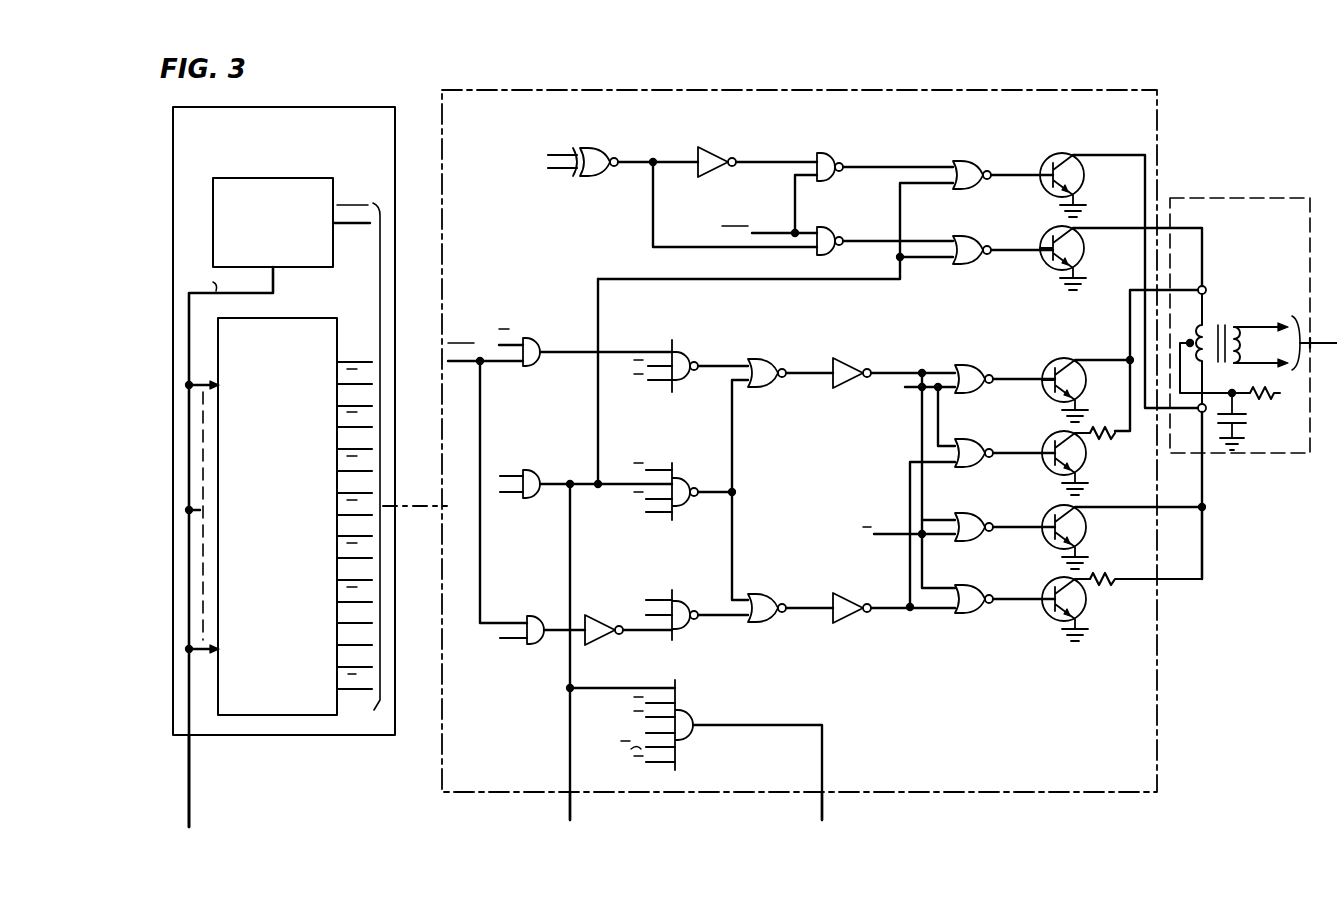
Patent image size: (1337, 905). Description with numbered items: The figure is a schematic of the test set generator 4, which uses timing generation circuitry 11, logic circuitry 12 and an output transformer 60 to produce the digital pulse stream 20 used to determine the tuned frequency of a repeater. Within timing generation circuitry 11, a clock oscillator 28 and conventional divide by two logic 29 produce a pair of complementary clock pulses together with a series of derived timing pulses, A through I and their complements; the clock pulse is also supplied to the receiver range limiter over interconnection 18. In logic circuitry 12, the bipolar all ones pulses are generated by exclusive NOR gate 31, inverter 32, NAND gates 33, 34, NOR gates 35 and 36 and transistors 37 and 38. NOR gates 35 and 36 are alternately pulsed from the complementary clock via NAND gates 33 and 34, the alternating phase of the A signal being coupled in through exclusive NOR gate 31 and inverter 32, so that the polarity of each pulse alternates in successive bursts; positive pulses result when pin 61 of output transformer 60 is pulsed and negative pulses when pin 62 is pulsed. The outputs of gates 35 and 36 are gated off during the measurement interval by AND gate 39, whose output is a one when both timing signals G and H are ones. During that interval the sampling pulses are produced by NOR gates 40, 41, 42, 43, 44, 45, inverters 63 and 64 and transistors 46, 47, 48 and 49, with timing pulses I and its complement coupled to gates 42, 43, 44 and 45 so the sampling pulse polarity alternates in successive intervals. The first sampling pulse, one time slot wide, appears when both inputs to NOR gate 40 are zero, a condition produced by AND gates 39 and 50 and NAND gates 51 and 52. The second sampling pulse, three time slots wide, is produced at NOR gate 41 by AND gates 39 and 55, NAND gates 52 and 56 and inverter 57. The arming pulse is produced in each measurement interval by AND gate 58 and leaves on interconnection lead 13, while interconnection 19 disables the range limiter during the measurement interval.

The timing generation circuitry 11 is at (391, 107).
The clock oscillator 28 is at (213, 206).
The divide by two logic 29 is at (318, 318).
The interconnection 18 is at (189, 778).
The generator 4 is at (843, 82).
The logic circuitry 12 is at (586, 121).
The exclusive NOR gate 31 is at (598, 178).
The inverter 32 is at (723, 134).
The NAND gate 33 is at (820, 153).
The NAND gate 34 is at (836, 254).
The NOR gate 35 is at (958, 160).
The NOR gate 36 is at (958, 236).
The transistor 37 is at (1058, 153).
The transistor 38 is at (1085, 255).
The AND gate 50 is at (530, 338).
The NAND gate 51 is at (676, 345).
The AND gate 39 is at (532, 470).
The NAND gate 52 is at (680, 470).
The NOR gate 40 is at (757, 359).
The inverter 63 is at (850, 358).
The NOR gate 42 is at (983, 393).
The NOR gate 43 is at (983, 467).
The NOR gate 44 is at (983, 541).
The NOR gate 45 is at (983, 613).
The NOR gate 41 is at (757, 594).
The inverter 64 is at (850, 593).
The transistor 46 is at (1086, 390).
The transistor 47 is at (1086, 463).
The transistor 48 is at (1086, 537).
The transistor 49 is at (1086, 609).
The AND gate 55 is at (535, 616).
The inverter 57 is at (600, 615).
The NAND gate 56 is at (680, 595).
The AND gate 58 is at (687, 712).
The interconnection 19 is at (572, 808).
The interconnection lead 13 is at (824, 808).
The output transformer 60 is at (1251, 183).
The pin 61 is at (1206, 287).
The pin 62 is at (1199, 412).
The digital pulse stream 20 is at (1327, 340).